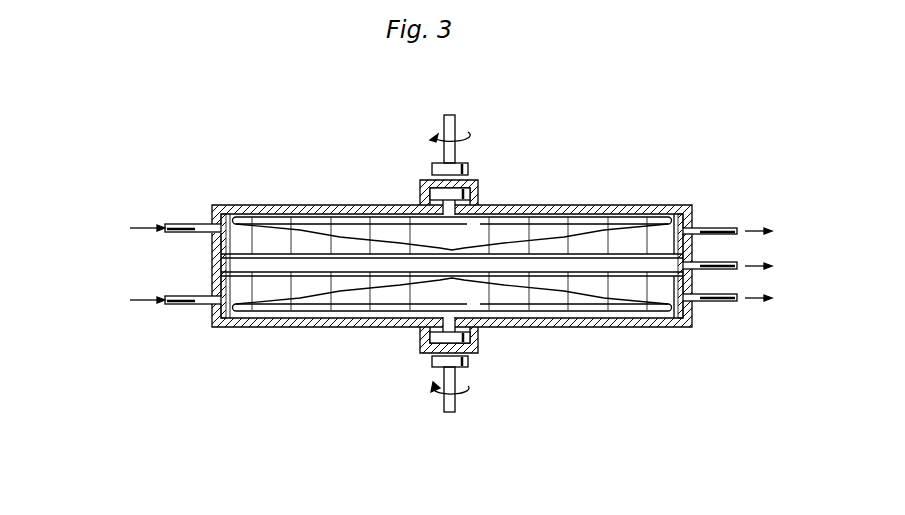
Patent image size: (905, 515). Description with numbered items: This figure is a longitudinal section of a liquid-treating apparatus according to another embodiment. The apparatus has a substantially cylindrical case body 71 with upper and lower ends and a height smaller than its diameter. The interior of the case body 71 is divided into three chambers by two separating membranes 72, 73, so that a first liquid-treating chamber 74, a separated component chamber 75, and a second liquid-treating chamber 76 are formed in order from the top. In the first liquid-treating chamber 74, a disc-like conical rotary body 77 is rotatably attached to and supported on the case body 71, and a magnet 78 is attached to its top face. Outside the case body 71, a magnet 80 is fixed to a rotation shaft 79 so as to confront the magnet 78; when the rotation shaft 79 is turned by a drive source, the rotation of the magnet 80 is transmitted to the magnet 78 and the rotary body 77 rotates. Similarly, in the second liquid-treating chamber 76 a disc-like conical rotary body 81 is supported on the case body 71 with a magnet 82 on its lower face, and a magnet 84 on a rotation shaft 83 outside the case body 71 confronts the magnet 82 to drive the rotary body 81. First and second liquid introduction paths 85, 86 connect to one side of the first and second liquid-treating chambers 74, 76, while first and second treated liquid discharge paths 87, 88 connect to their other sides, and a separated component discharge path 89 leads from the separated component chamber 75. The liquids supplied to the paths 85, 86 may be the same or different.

The case body 71 is at (618, 207).
The separating membrane 72 is at (248, 237).
The separating membrane 73 is at (248, 290).
The first liquid-treating chamber 74 is at (665, 246).
The separated component chamber 75 is at (230, 264).
The second liquid-treating chamber 76 is at (665, 286).
The disc-like conical rotary body 77 is at (558, 224).
The magnet 78 is at (478, 192).
The rotation shaft 79 is at (453, 118).
The magnet 80 is at (470, 166).
The disc-like conical rotary body 81 is at (357, 298).
The magnet 82 is at (420, 340).
The rotation shaft 83 is at (456, 382).
The magnet 84 is at (470, 363).
The first liquid introduction path 85 is at (187, 222).
The second liquid introduction path 86 is at (186, 304).
The first treated liquid discharge path 87 is at (722, 228).
The second treated liquid discharge path 88 is at (715, 302).
The separated component discharge path 89 is at (733, 265).